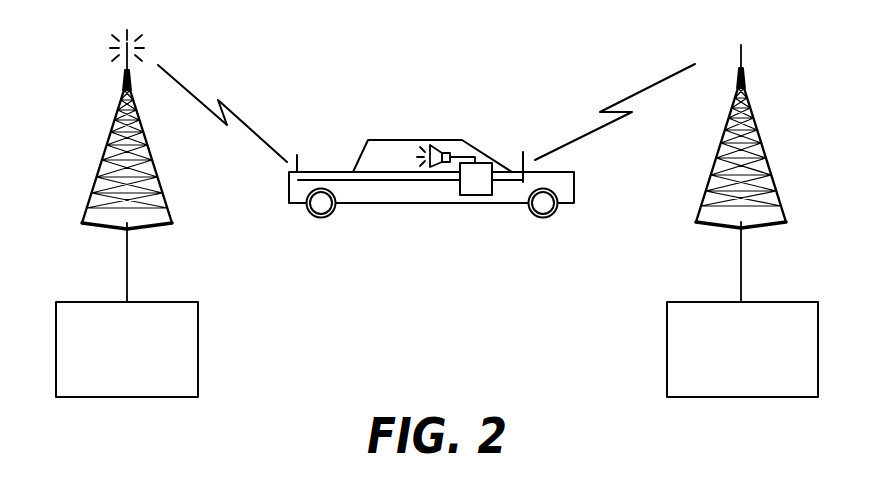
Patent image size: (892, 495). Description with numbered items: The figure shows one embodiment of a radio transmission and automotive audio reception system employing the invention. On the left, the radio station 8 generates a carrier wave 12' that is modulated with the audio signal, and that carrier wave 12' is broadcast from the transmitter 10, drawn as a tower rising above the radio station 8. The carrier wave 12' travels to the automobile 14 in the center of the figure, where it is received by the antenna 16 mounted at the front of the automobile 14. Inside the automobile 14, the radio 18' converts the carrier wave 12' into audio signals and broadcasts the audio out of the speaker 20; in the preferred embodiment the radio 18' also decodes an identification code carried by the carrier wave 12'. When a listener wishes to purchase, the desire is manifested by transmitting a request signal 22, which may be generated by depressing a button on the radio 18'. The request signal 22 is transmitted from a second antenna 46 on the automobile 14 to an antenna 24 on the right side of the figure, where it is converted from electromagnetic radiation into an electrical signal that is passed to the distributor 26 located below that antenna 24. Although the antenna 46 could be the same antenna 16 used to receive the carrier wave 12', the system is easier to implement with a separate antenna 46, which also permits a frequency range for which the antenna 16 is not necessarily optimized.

The radio station 8 is at (200, 348).
The transmitter 10 is at (113, 139).
The carrier wave 12' is at (231, 113).
The automobile 14 is at (566, 172).
The antenna 16 is at (298, 166).
The radio 18' is at (444, 199).
The speaker 20 is at (447, 145).
The request signal 22 is at (623, 100).
The antenna 24 is at (753, 112).
The distributor 26 is at (667, 350).
The antenna 46 is at (521, 162).